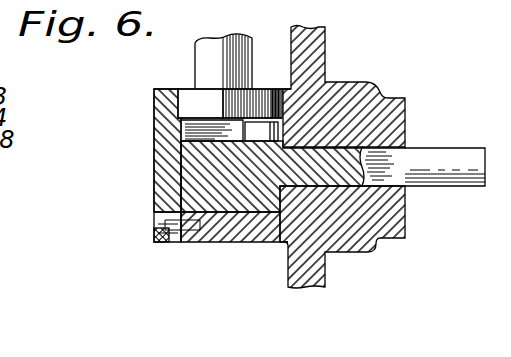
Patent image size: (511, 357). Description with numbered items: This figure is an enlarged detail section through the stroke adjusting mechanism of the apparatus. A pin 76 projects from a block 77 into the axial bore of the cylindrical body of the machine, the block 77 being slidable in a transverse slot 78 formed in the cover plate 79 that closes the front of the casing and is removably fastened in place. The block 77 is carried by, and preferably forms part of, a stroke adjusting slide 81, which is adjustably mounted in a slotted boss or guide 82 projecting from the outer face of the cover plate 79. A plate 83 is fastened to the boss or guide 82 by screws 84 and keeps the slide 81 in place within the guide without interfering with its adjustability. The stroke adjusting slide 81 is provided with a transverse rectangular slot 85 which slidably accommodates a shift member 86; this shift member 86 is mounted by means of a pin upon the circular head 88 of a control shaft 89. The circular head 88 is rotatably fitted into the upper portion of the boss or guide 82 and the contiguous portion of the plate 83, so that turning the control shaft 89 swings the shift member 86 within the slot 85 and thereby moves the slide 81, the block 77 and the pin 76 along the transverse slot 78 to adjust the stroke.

The pin 76 is at (462, 151).
The block 77 is at (398, 157).
The transverse slot 78 is at (330, 145).
The cover plate 79 is at (297, 268).
The stroke adjusting slide 81 is at (200, 188).
The slotted boss or guide 82 is at (208, 233).
The plate 83 is at (155, 140).
The screws 84 is at (167, 244).
The transverse rectangular slot 85 is at (183, 127).
The shift member 86 is at (240, 121).
The circular head 88 is at (255, 100).
The control shaft 89 is at (202, 58).